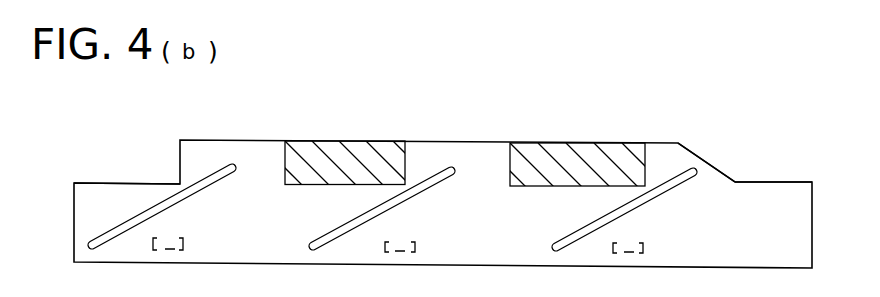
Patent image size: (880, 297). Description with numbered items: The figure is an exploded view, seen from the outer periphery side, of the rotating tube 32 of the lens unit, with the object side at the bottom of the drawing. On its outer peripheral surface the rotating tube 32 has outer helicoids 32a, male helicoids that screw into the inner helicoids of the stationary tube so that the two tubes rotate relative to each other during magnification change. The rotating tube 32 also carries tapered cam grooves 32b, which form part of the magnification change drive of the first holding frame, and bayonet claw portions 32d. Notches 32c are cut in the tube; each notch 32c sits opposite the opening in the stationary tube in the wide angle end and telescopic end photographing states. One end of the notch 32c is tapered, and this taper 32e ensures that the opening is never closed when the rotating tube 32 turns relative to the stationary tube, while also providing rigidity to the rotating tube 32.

The rotating tube 32 is at (178, 135).
The outer helicoids 32a is at (352, 160).
The tapered cam grooves 32b is at (192, 190).
The notch 32c is at (135, 172).
The bayonet claw portions 32d is at (167, 237).
The taper 32e is at (708, 162).